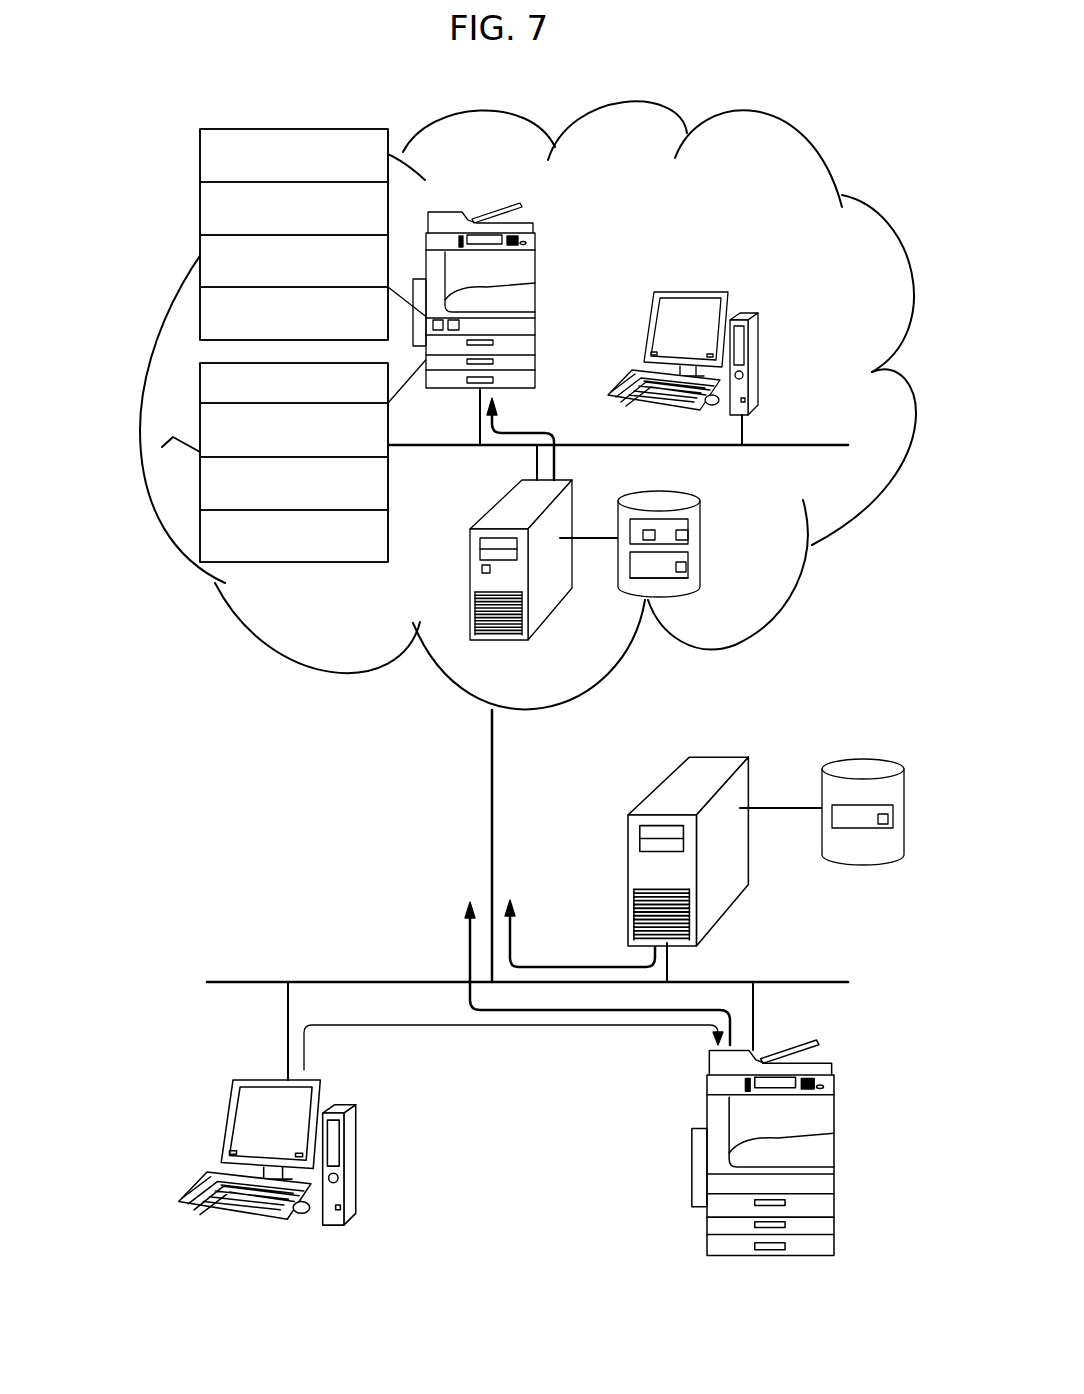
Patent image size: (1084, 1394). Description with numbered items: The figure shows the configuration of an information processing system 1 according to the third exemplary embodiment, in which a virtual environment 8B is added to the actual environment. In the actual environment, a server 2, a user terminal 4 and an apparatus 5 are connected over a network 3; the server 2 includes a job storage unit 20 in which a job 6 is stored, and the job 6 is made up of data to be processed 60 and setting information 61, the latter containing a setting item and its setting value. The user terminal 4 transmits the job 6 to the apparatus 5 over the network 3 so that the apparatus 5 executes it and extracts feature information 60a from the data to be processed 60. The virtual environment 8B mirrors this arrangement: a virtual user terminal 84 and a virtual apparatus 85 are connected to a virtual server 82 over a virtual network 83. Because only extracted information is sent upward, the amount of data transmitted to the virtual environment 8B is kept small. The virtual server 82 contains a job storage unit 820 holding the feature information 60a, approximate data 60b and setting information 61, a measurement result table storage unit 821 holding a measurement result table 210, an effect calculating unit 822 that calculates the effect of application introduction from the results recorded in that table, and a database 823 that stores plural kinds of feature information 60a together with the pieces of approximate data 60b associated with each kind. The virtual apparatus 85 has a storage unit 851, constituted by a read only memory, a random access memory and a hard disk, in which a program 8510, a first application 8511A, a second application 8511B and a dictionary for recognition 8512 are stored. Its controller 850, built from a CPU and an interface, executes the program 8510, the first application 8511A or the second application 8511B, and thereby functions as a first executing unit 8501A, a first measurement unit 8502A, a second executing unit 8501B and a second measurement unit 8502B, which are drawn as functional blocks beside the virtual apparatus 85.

The information processing system 1 is at (230, 777).
The server 2 is at (750, 775).
The network 3 is at (823, 970).
The user terminal 4 is at (345, 1107).
The apparatus 5 is at (835, 1108).
The job 6 is at (480, 1028).
The virtual environment 8B is at (648, 106).
The job storage unit 20 is at (888, 812).
The data to be processed 60 is at (893, 819).
The feature information 60a is at (648, 530).
The approximate data 60b is at (523, 433).
The setting information 61 is at (690, 534).
The virtual server 82 is at (512, 542).
The virtual network 83 is at (795, 443).
The virtual user terminal 84 is at (750, 313).
The virtual apparatus 85 is at (523, 224).
The measurement result table 210 is at (690, 572).
The job storage unit 820 is at (590, 750).
The measurement result table storage unit 821 is at (690, 557).
The effect calculating unit 822 is at (480, 568).
The database 823 is at (672, 578).
The controller 850 is at (216, 234).
The first executing unit 8501A is at (200, 160).
The first measurement unit 8502A is at (200, 206).
The second executing unit 8501B is at (200, 262).
The second measurement unit 8502B is at (245, 297).
The storage unit 851 is at (216, 461).
The program 8510 is at (200, 388).
The first application 8511A is at (200, 428).
The second application 8511B is at (200, 477).
The dictionary for recognition 8512 is at (245, 534).